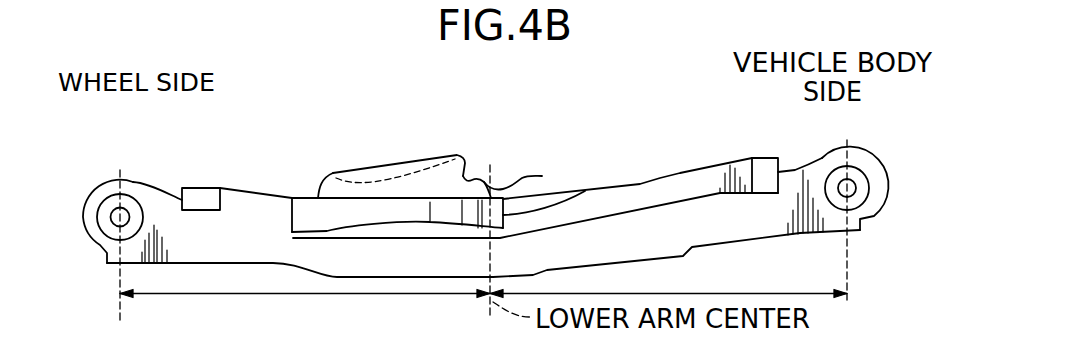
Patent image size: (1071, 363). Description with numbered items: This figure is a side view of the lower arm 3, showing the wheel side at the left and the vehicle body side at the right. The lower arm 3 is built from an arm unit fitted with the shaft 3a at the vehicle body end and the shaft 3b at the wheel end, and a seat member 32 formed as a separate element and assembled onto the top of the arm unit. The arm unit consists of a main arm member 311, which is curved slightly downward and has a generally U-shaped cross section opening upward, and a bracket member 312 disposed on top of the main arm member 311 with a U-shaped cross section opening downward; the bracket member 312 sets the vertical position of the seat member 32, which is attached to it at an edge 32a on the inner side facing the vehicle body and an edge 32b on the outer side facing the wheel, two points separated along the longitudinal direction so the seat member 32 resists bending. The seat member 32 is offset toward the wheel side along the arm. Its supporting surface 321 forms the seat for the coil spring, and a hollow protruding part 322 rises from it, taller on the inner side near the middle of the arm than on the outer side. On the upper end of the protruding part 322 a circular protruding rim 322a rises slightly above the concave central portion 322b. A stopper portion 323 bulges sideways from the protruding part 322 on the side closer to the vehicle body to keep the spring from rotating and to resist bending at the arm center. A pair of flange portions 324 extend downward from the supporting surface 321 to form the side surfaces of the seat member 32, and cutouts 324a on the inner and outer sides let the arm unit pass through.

The lower arm 3 is at (603, 147).
The shaft 3a is at (847, 179).
The shaft 3b is at (120, 182).
The main arm member 311 is at (188, 253).
The bracket member 312 is at (183, 187).
The seat member 32 is at (372, 153).
The edge 32a is at (532, 177).
The edge 32b is at (290, 198).
The supporting surface 321 is at (317, 196).
The protruding part 322 is at (464, 174).
The protruding rim 322a is at (331, 174).
The central portion 322b is at (407, 181).
The stopper portion 323 is at (490, 175).
The flange portions 324 is at (327, 218).
The cutouts 324a is at (266, 201).